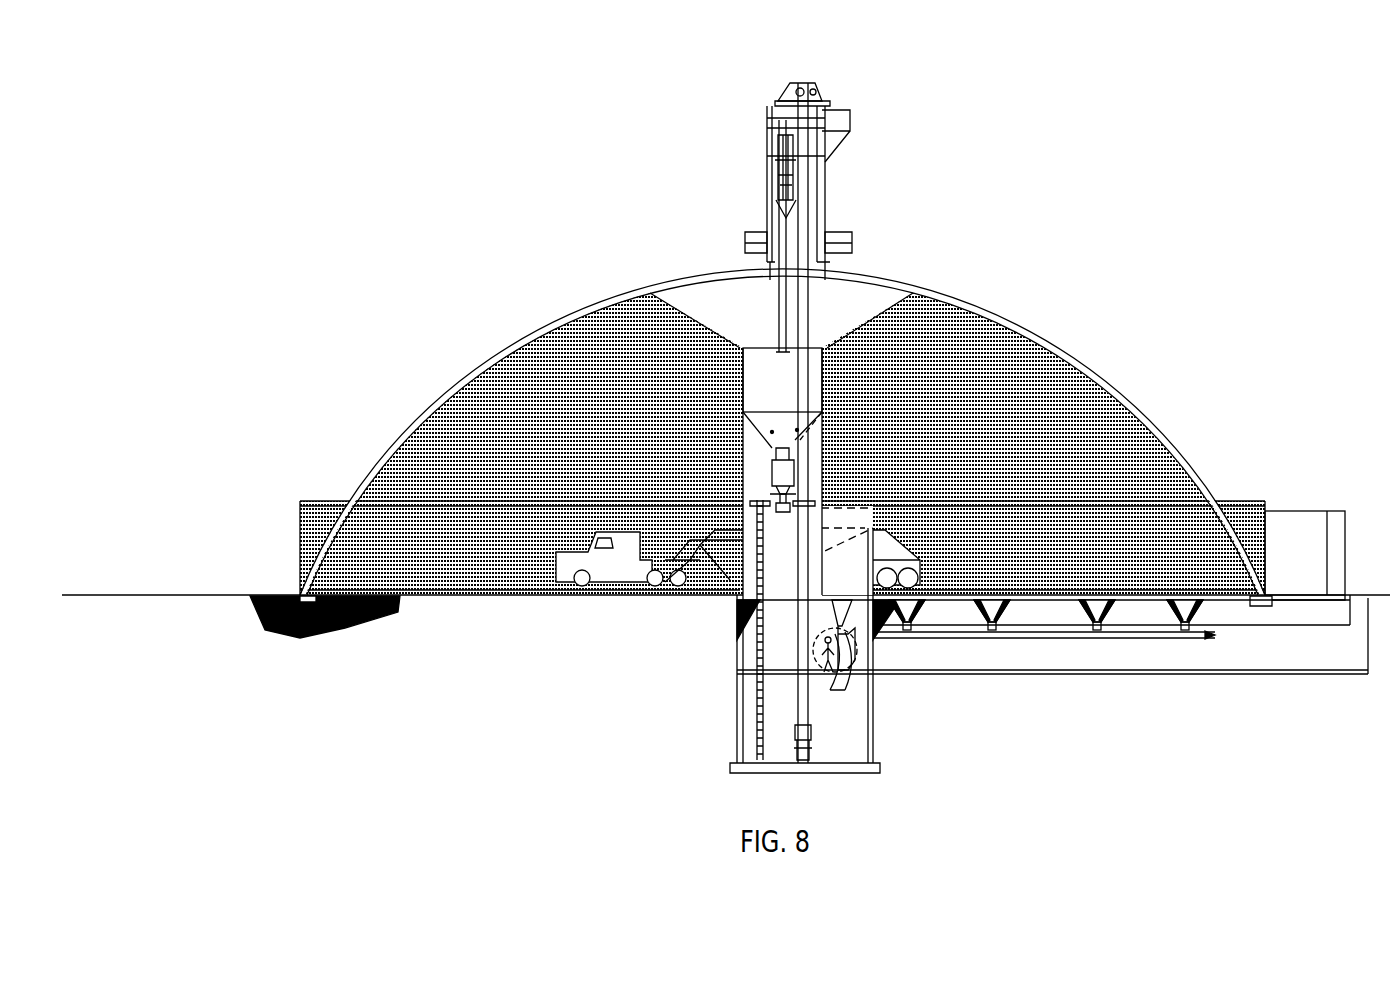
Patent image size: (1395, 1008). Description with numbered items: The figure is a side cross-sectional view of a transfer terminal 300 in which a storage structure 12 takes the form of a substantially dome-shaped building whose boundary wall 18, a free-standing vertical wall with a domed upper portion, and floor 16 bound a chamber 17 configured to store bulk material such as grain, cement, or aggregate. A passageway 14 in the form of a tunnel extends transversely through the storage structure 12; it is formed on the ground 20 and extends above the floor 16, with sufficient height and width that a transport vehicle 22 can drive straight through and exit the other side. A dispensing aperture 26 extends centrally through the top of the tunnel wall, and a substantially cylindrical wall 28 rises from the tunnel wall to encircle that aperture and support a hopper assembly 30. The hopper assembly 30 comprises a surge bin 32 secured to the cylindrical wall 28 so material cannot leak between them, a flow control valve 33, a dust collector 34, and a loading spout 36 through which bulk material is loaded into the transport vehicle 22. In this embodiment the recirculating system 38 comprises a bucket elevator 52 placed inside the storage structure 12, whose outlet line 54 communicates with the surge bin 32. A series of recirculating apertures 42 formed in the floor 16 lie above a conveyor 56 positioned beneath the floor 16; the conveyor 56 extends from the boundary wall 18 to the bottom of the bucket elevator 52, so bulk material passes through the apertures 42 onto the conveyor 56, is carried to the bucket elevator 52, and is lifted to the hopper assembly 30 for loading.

The transfer terminal 300 is at (1003, 288).
The storage structure 12 is at (782, 432).
The passageway 14 is at (783, 444).
The floor 16 is at (455, 600).
The chamber 17 is at (1105, 420).
The boundary wall 18 is at (1075, 360).
The ground 20 is at (265, 590).
The transport vehicle 22 is at (612, 560).
The dispensing aperture 26 is at (813, 510).
The cylindrical wall 28 is at (773, 462).
The hopper assembly 30 is at (940, 428).
The surge bin 32 is at (760, 385).
The flow control valve 33 is at (770, 435).
The dust collector 34 is at (775, 480).
The loading spout 36 is at (772, 497).
The recirculating system 38 is at (748, 180).
The recirculating apertures 42 is at (990, 625).
The bucket elevator 52 is at (820, 183).
The outlet line 54 is at (780, 352).
The conveyor 56 is at (1047, 622).